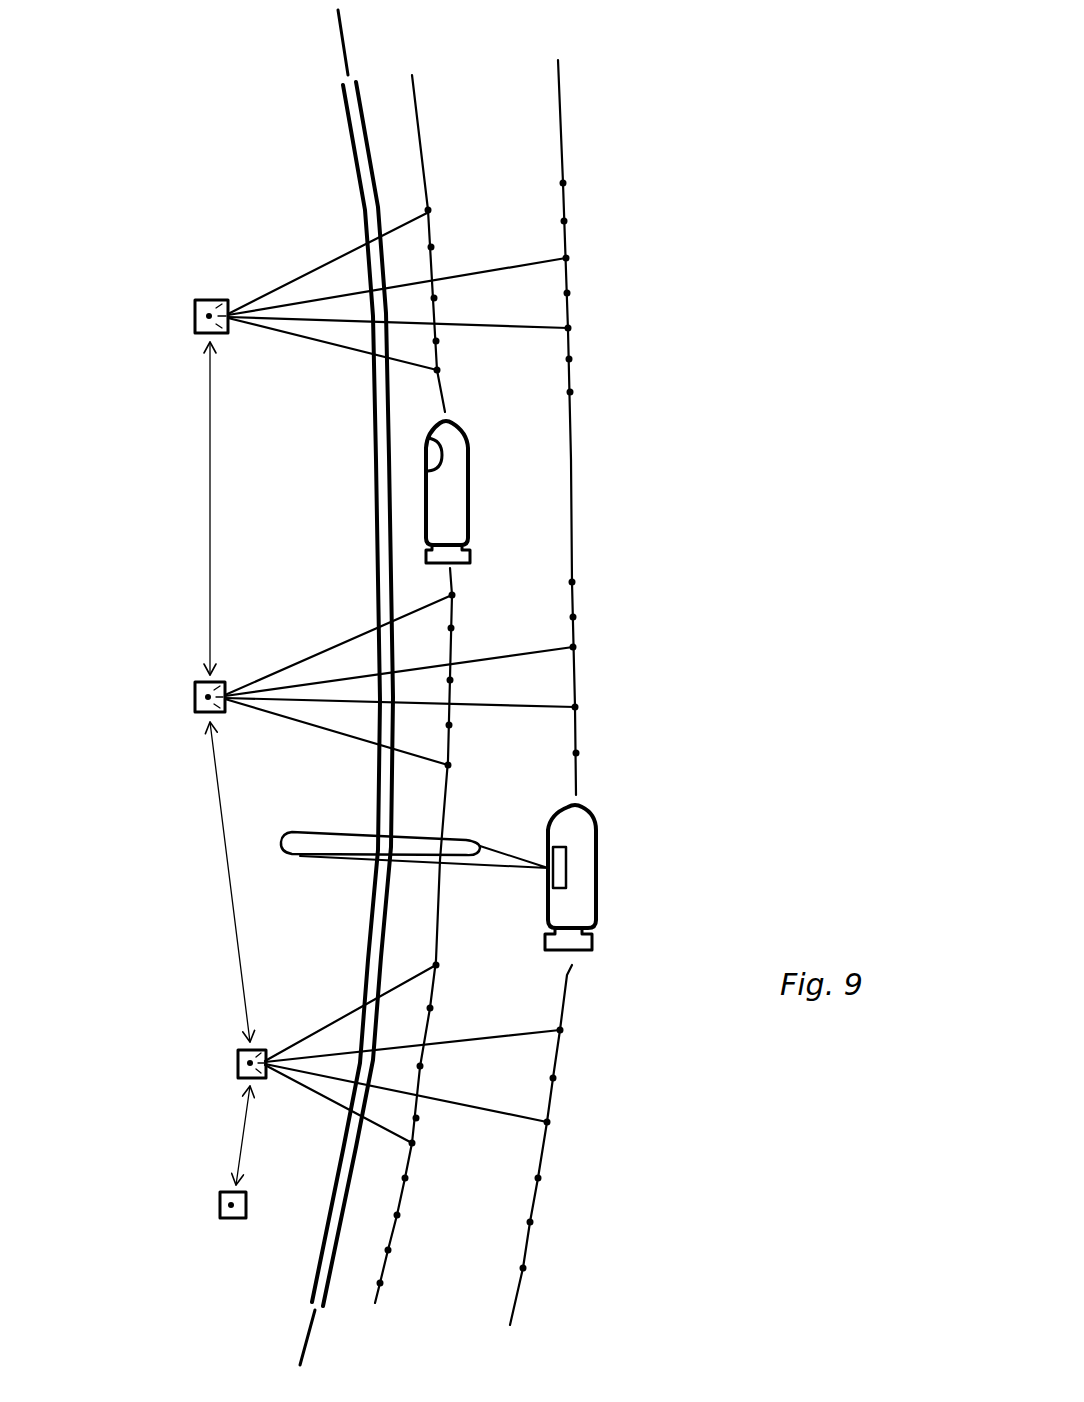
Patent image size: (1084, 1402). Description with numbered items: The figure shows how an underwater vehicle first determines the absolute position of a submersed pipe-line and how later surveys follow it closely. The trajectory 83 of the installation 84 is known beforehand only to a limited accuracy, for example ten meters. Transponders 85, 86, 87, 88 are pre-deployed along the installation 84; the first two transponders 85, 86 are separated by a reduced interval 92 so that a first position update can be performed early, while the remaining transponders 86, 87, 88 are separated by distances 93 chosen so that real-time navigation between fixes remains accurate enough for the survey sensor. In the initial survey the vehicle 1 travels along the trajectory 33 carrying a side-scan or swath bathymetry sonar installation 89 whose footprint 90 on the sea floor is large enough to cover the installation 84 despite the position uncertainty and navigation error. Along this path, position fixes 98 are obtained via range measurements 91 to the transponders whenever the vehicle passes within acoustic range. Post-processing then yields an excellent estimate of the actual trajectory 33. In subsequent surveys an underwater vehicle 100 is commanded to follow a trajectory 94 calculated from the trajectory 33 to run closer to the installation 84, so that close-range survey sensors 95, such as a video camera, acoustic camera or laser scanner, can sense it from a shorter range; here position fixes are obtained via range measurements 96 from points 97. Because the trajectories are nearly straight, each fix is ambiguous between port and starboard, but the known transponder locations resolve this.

The underwater vehicle 1 is at (598, 870).
The trajectory of the underwater vehicle 33 is at (573, 500).
The trajectory of the installation 83 is at (340, 32).
The installation 84 is at (375, 460).
The transponder 85 is at (218, 1205).
The transponder 86 is at (236, 1063).
The transponder 87 is at (193, 697).
The transponder 88 is at (193, 316).
The sonar installation 89 is at (551, 876).
The footprint 90 is at (423, 836).
The range measurements 91 is at (311, 298).
The reduced interval 92 is at (242, 1135).
The distance between consecutive transponders 93 is at (208, 478).
The trajectory 94 is at (421, 142).
The close-range survey sensors 95 is at (432, 453).
The range measurements 96 is at (283, 280).
The points 97 is at (441, 245).
The position fixes 98 is at (576, 257).
The underwater vehicle 100 is at (470, 470).